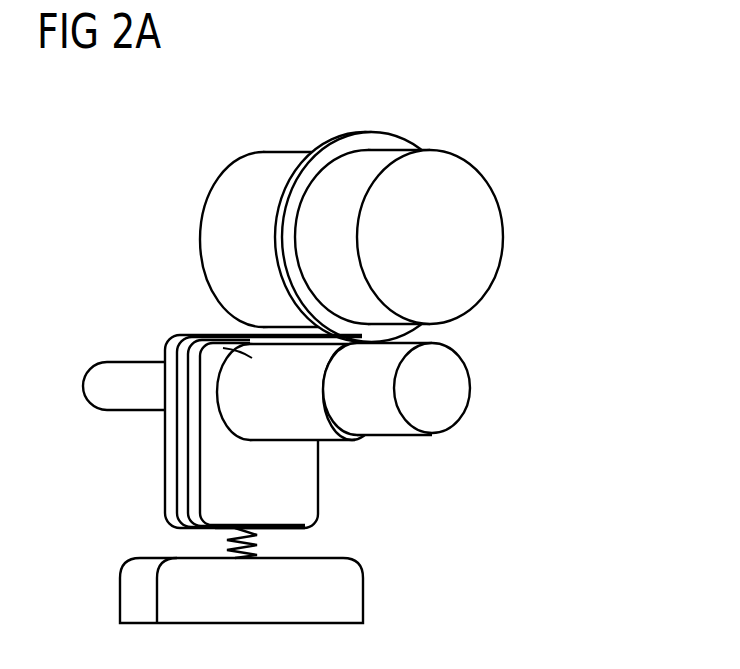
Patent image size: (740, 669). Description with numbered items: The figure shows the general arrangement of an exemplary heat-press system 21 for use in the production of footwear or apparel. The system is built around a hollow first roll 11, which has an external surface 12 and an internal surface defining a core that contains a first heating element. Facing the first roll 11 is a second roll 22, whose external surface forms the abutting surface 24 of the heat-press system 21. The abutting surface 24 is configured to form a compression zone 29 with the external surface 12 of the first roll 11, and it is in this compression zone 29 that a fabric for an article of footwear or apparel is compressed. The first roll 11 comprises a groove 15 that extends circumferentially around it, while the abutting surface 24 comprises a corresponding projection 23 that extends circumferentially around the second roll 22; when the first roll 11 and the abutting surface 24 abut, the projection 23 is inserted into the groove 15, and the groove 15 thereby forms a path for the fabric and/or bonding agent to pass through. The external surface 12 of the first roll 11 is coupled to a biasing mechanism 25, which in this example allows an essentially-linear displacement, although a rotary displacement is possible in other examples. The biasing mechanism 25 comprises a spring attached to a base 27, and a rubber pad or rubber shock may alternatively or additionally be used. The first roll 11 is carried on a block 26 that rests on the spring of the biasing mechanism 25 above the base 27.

The heat-press system 21 is at (86, 152).
The abutting surface 24 is at (233, 182).
The projection 23 is at (383, 137).
The second roll 22 is at (486, 265).
The external surface 12 is at (166, 352).
The compression zone 29 is at (283, 332).
The block 26 is at (310, 475).
The first roll 11 is at (240, 417).
The groove 15 is at (368, 438).
The biasing mechanism 25 is at (232, 535).
The base 27 is at (353, 605).